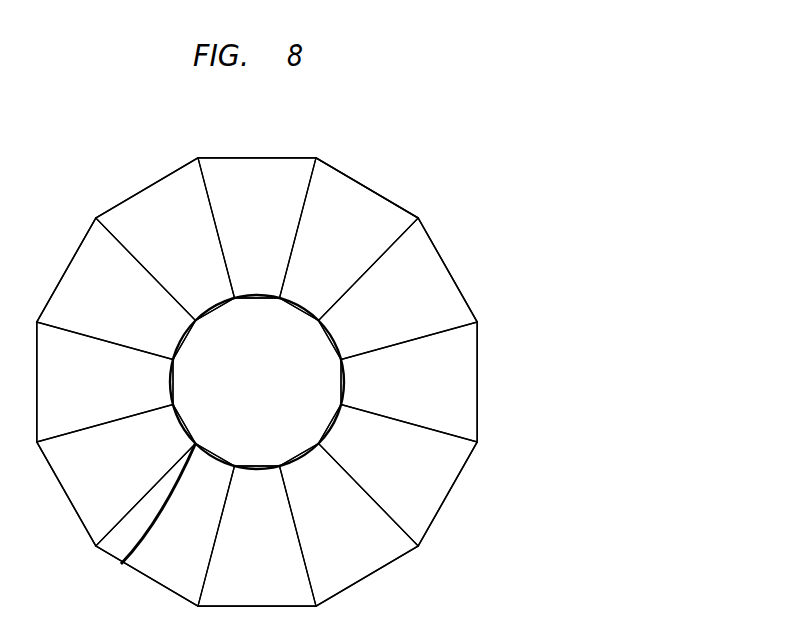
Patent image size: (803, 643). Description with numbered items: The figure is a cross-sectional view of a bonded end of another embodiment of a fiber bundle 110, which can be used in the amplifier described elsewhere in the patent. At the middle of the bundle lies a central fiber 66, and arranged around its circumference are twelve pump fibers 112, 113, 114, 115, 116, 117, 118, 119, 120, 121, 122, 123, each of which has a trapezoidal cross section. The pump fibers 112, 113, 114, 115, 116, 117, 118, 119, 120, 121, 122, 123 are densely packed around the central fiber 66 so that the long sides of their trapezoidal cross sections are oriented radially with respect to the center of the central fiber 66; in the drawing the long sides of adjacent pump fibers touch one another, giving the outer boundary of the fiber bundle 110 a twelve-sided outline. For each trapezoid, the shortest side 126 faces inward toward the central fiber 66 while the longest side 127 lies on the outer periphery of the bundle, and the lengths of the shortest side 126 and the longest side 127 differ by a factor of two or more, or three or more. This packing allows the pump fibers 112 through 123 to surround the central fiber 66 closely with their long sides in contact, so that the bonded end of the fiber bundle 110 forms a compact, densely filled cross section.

The central fiber 66 is at (272, 396).
The fiber bundle 110 is at (493, 519).
The pump fiber 112 is at (278, 222).
The pump fiber 113 is at (348, 266).
The pump fiber 114 is at (417, 320).
The pump fiber 115 is at (438, 396).
The pump fiber 116 is at (420, 472).
The pump fiber 117 is at (357, 534).
The pump fiber 118 is at (278, 550).
The pump fiber 119 is at (197, 538).
The pump fiber 120 is at (133, 478).
The pump fiber 121 is at (112, 394).
The pump fiber 122 is at (132, 314).
The pump fiber 123 is at (193, 264).
The shortest side 126 is at (121, 564).
The longest side 127 is at (393, 197).